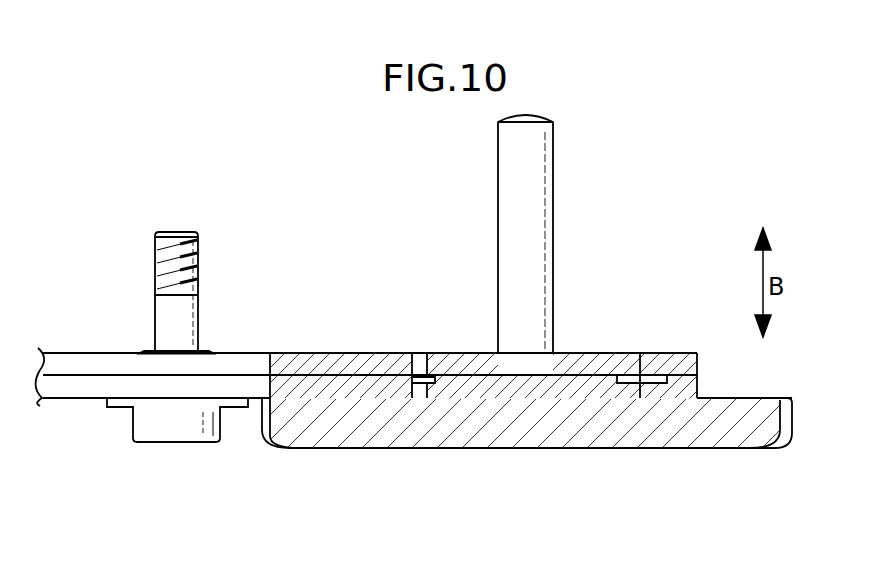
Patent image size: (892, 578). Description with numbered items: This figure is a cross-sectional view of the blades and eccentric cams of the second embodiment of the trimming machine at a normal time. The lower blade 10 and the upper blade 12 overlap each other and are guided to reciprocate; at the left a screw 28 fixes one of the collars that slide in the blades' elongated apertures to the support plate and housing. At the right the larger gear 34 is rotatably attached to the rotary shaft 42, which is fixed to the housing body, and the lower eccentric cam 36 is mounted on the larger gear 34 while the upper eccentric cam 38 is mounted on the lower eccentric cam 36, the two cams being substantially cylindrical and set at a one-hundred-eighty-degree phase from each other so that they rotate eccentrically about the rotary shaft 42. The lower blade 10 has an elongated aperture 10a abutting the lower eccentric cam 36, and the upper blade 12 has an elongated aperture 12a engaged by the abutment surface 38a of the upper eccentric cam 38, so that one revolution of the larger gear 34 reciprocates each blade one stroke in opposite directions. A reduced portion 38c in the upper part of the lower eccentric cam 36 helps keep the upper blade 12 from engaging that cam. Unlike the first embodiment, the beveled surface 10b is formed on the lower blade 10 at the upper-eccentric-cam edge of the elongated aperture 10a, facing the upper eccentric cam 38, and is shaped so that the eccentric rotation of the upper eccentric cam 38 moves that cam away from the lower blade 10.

The lower blade 10 is at (77, 388).
The elongated aperture 10a is at (430, 385).
The beveled surface 10b is at (657, 378).
The upper blade 12 is at (71, 365).
The elongated aperture 12a is at (412, 365).
The screw 28 is at (177, 428).
The larger gear 34 is at (713, 422).
The lower eccentric cam 36 is at (582, 390).
The upper eccentric cam 38 is at (580, 353).
The abutment surface 38a is at (656, 380).
The reduced portion 38c is at (428, 386).
The rotary shaft 42 is at (548, 208).